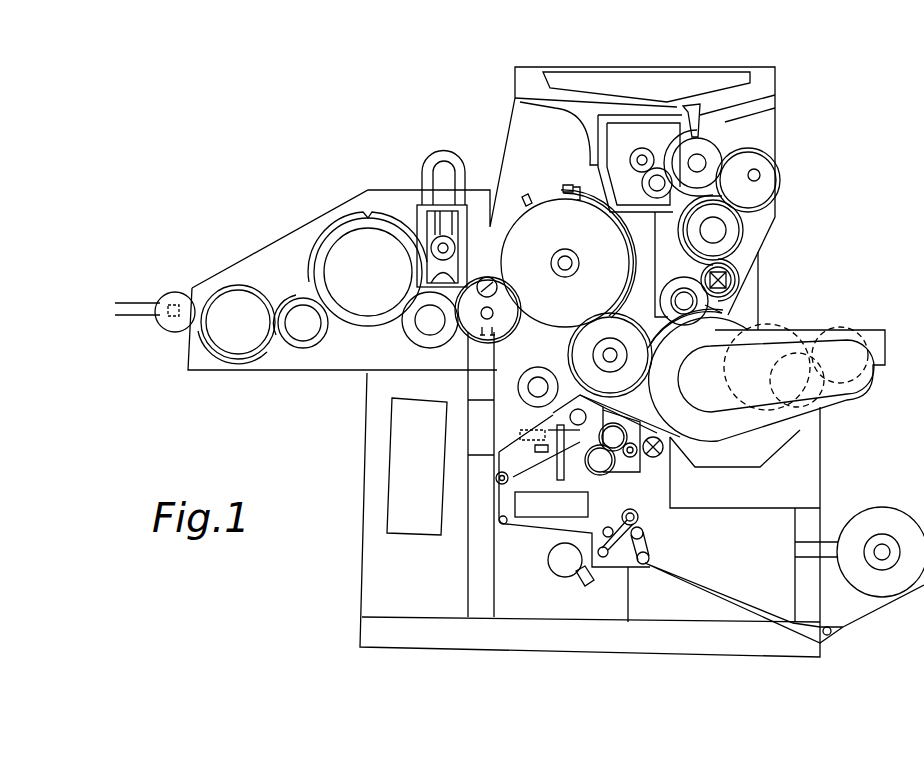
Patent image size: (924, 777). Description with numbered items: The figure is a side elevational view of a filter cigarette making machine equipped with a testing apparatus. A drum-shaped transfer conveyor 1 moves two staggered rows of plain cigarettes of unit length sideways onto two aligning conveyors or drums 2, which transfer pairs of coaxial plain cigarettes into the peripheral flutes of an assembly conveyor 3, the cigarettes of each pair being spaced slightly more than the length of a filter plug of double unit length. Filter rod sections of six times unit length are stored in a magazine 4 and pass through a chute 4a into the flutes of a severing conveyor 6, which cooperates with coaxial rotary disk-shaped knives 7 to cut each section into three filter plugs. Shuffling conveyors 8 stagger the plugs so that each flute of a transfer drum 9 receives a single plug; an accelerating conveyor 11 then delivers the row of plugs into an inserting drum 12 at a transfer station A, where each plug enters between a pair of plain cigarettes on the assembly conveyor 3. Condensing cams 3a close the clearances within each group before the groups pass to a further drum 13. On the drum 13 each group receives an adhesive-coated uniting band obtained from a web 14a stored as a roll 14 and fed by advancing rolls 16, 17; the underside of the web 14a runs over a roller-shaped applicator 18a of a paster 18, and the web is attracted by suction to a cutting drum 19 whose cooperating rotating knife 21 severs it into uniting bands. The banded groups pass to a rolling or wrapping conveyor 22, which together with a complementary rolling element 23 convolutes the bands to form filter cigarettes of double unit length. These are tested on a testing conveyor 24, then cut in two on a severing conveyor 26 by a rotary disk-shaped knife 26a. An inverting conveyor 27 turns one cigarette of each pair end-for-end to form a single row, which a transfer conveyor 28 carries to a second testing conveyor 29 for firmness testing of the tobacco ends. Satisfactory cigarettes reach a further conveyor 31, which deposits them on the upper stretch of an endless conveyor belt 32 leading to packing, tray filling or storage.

The transfer conveyor 1 is at (845, 330).
The aligning conveyors 2 is at (833, 398).
The assembly conveyor 3 is at (770, 455).
The condensing cams 3a is at (640, 327).
The magazine 4 is at (697, 75).
The chute 4a is at (720, 110).
The severing conveyor 6 is at (705, 150).
The rotary disk-shaped knives 7 is at (650, 187).
The shuffling conveyors 8 is at (760, 186).
The transfer drum 9 is at (728, 230).
The accelerating conveyor 11 is at (733, 279).
The inserting drum 12 is at (704, 306).
The further drum 13 is at (580, 340).
The roll 14 is at (875, 510).
The web 14a is at (727, 590).
The advancing roll 16 is at (650, 542).
The advancing roll 17 is at (640, 519).
The paster 18 is at (551, 506).
The applicator 18a is at (611, 460).
The cutting drum 19 is at (555, 415).
The rotating knife 21 is at (652, 460).
The rolling or wrapping conveyor 22 is at (560, 213).
The rolling element 23 is at (622, 272).
The testing conveyor 24 is at (470, 338).
The severing conveyor 26 is at (412, 338).
The rotary disk-shaped knife 26a is at (470, 230).
The inverting conveyor 27 is at (373, 233).
The transfer conveyor 28 is at (298, 350).
The second testing conveyor 29 is at (235, 350).
The further conveyor 31 is at (176, 298).
The endless conveyor belt 32 is at (155, 305).
The transfer station A is at (705, 336).